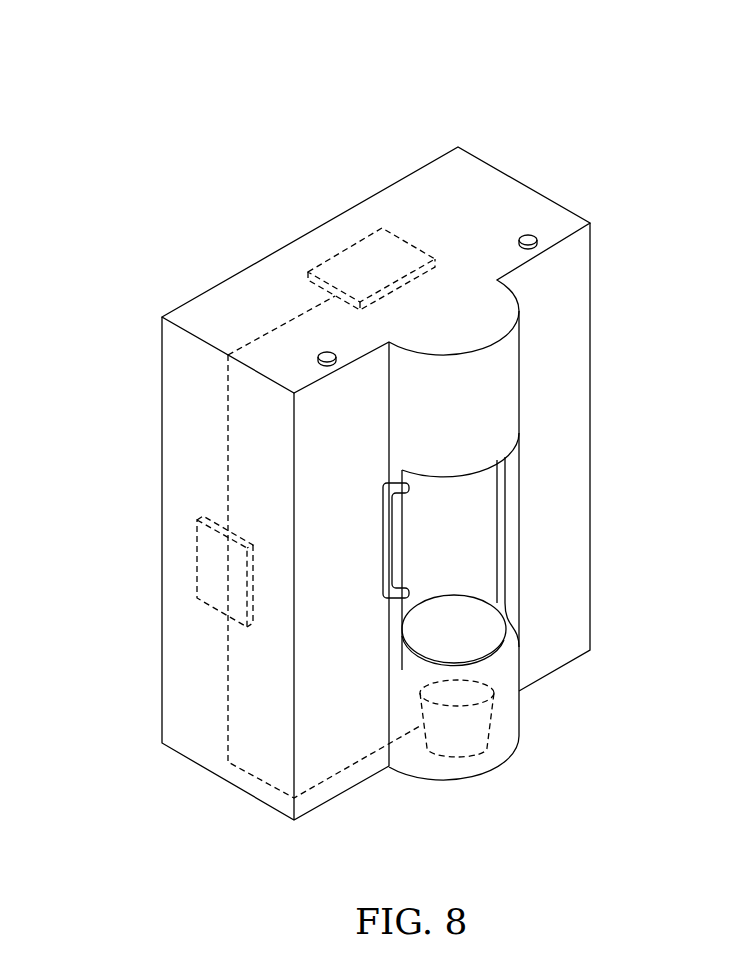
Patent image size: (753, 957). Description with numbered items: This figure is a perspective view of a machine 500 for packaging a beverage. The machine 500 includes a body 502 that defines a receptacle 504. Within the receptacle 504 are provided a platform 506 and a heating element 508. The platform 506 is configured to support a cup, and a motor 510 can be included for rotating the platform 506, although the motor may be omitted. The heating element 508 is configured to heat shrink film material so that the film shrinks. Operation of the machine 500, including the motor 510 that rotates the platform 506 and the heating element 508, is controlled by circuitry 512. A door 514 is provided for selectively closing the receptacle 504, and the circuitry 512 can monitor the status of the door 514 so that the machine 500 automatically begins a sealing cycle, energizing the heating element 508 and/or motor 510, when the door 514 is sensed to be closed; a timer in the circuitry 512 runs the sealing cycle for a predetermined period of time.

The machine 500 is at (129, 53).
The body 502 is at (583, 290).
The receptacle 504 is at (480, 495).
The platform 506 is at (490, 625).
The heating element 508 is at (358, 255).
The motor 510 is at (455, 747).
The circuitry 512 is at (213, 577).
The door 514 is at (388, 530).